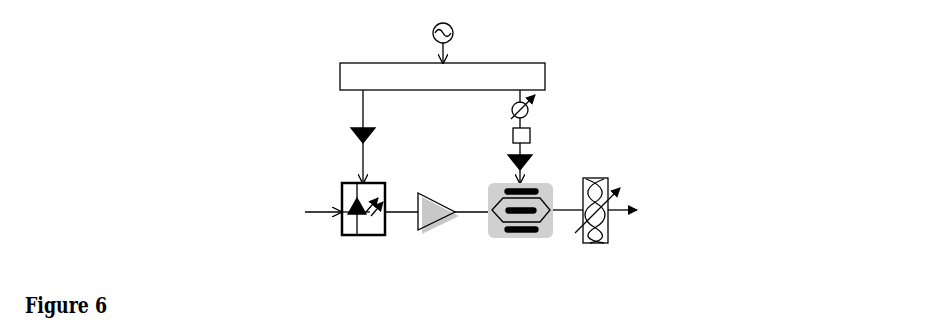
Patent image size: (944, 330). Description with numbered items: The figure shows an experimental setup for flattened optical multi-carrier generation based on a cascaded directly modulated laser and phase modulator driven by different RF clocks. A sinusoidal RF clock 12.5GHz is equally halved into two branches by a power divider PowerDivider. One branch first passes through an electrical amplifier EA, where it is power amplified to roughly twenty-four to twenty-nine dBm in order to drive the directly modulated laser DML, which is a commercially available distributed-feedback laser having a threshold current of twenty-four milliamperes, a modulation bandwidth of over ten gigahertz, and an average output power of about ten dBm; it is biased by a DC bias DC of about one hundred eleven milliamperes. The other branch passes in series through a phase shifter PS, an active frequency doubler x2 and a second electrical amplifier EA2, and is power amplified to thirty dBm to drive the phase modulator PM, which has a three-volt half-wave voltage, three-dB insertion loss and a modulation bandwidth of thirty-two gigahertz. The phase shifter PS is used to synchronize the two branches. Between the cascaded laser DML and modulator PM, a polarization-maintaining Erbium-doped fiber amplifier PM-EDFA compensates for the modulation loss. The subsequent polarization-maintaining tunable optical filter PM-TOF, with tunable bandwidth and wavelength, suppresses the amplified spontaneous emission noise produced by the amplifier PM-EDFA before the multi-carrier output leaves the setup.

The sinusoidal RF clock 12.5GHz is at (480, 43).
The power divider PowerDivider is at (442, 76).
The electrical amplifier EA is at (348, 136).
The phase shifter PS is at (509, 105).
The active frequency doubler x2 is at (507, 132).
The electrical amplifier EA2 is at (506, 163).
The DC bias DC is at (323, 200).
The directly modulated laser DML is at (362, 221).
The polarization-maintaining Erbium-doped fiber amplifier PM-EDFA is at (436, 226).
The phase modulator PM is at (535, 222).
The polarization-maintaining tunable optical filter PM-TOF is at (598, 198).